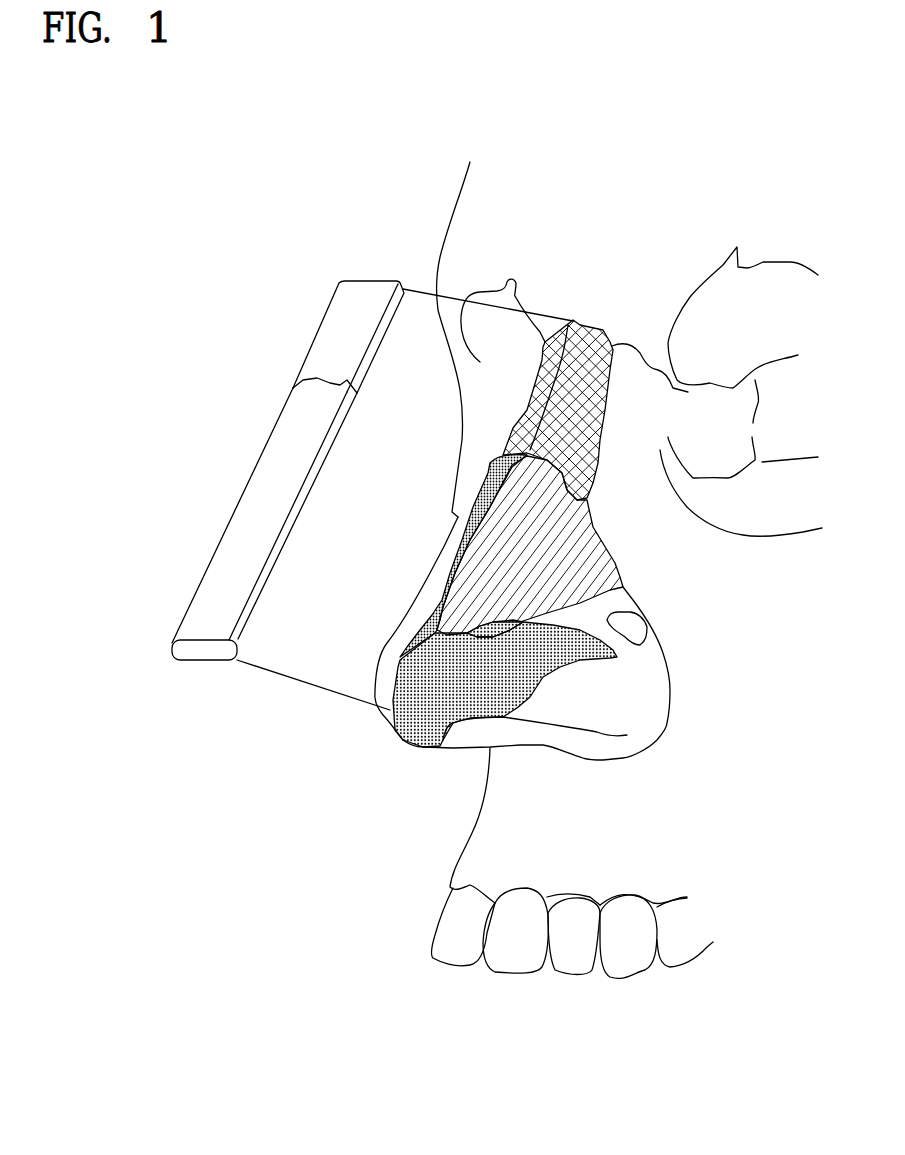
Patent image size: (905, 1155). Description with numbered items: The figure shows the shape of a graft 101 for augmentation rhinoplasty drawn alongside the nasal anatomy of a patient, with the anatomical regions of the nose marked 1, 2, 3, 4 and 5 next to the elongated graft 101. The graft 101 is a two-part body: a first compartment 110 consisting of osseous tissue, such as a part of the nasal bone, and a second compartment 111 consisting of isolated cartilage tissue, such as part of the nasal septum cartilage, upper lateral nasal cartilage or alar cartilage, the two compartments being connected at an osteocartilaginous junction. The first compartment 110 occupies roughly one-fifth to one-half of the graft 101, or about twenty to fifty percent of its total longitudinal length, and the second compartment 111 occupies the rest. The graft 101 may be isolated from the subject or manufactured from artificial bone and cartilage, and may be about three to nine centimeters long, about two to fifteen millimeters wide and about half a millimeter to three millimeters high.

The nasal bone region 1 is at (560, 410).
The upper lateral cartilage region 2 is at (529, 543).
The nasal dorsum margin region 3 is at (463, 555).
The intermediate cartilage region 4 is at (495, 629).
The lower lateral (alar) cartilage region 5 is at (505, 684).
The graft 101 is at (238, 275).
The first compartment 110 is at (332, 328).
The second compartment 111 is at (243, 508).